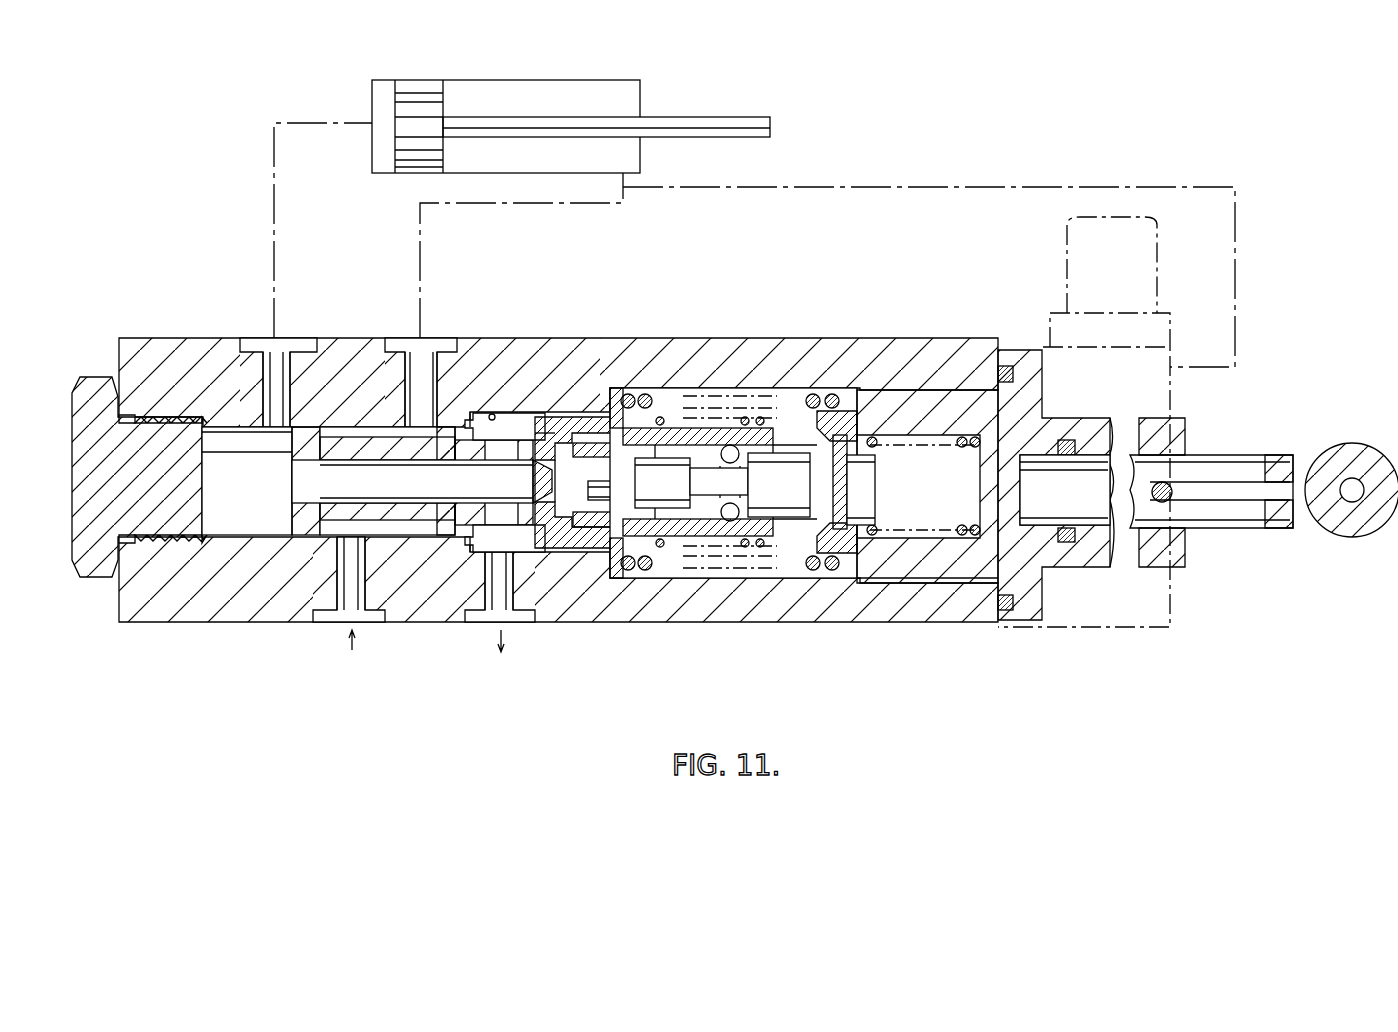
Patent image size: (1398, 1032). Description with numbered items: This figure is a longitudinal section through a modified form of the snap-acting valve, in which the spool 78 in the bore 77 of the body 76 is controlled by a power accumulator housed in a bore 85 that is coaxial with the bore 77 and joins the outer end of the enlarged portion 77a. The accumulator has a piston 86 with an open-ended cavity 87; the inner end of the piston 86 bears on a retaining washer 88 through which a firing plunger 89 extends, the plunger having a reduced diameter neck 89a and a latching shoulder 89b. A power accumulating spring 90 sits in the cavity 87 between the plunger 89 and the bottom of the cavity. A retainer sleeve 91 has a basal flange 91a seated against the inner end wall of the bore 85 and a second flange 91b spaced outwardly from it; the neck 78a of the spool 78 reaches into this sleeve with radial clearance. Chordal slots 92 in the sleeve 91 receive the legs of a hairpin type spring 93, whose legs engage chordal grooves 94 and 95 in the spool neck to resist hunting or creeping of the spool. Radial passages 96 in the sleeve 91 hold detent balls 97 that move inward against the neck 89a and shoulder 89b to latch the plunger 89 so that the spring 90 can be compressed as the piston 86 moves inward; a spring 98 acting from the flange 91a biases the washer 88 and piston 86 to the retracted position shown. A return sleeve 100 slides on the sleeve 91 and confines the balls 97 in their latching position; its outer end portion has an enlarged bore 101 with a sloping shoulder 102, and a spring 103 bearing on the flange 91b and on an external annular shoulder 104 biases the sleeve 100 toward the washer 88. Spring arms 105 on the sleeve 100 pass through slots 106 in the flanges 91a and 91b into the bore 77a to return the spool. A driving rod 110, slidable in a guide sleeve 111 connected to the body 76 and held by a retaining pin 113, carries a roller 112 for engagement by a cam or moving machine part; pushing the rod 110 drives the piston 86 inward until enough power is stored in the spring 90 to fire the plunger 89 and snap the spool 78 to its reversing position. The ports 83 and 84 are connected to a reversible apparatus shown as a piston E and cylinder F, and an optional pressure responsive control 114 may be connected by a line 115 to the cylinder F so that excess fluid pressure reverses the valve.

The body 76 is at (982, 345).
The bore 77 is at (240, 528).
The enlarged portion of the bore 77a is at (488, 405).
The spool 78 is at (580, 550).
The neck of the spool 78a is at (598, 417).
The port 83 is at (410, 373).
The port 84 is at (275, 372).
The bore 85 is at (742, 545).
The piston 86 is at (903, 572).
The cavity 87 is at (948, 395).
The retaining washer 88 is at (913, 435).
The firing plunger 89 is at (795, 548).
The reduced diameter neck 89a is at (707, 540).
The latching shoulder 89b is at (802, 435).
The power accumulating spring 90 is at (962, 448).
The retainer sleeve 91 is at (752, 418).
The basal flange 91a is at (628, 572).
The flange 91b is at (640, 392).
The chordal slots 92 is at (603, 528).
The hairpin type spring 93 is at (537, 525).
The chordal groove 94 is at (590, 498).
The chordal groove 95 is at (730, 445).
The radial passages 96 is at (748, 478).
The detent balls 97 is at (682, 487).
The spring 98 is at (822, 545).
The sleeve 100 is at (738, 535).
The enlarged bore 101 is at (815, 394).
The shoulder 102 is at (772, 400).
The spring 103 is at (663, 548).
The external annular shoulder 104 is at (798, 548).
The spring arms 105 is at (530, 412).
The slots 106 is at (533, 482).
The driving rod 110 is at (1225, 528).
The guide sleeve 111 is at (1083, 567).
The roller 112 is at (1345, 536).
The retaining pin 113 is at (1168, 488).
The pressure responsive control 114 is at (1172, 405).
The fluid line 115 is at (1010, 185).
The piston E is at (423, 80).
The cylinder F is at (545, 80).